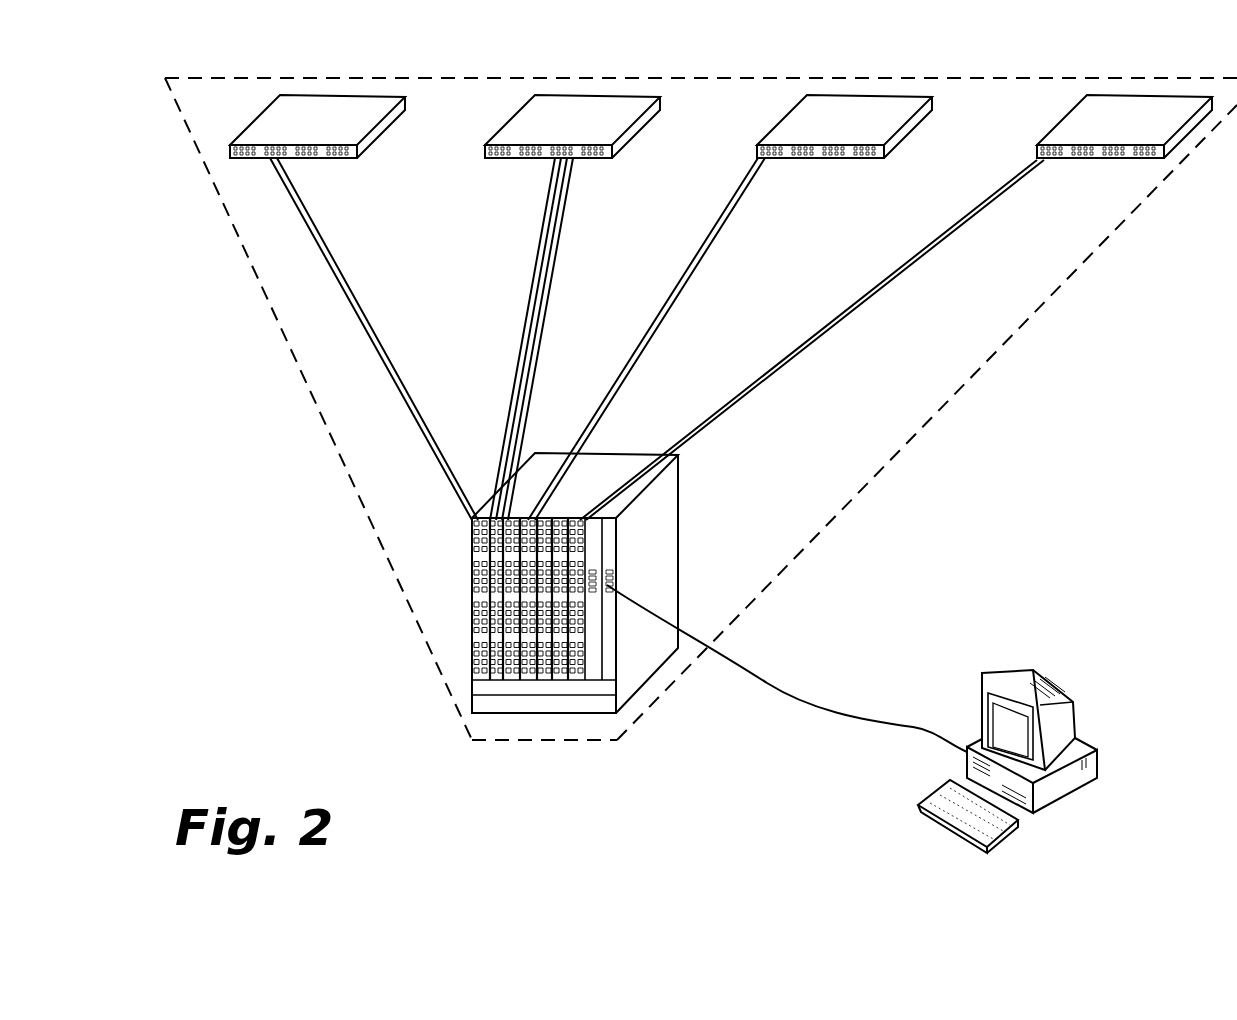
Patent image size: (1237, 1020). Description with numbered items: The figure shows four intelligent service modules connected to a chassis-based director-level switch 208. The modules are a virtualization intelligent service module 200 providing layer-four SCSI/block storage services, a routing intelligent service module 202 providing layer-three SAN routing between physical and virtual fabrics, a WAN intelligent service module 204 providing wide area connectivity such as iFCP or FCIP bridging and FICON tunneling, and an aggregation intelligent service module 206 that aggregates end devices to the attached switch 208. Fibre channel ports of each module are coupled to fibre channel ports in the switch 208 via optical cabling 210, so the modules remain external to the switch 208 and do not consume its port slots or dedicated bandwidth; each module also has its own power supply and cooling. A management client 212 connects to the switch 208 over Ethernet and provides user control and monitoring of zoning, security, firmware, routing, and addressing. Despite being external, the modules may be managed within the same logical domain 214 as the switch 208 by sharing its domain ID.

The virtualization intelligent service module 200 is at (333, 110).
The routing intelligent service module 202 is at (588, 110).
The WAN intelligent service module 204 is at (861, 110).
The aggregation intelligent service module 206 is at (1141, 110).
The chassis-based director-level switch 208 is at (653, 518).
The optical cabling 210 is at (985, 315).
The management client 212 is at (1082, 742).
The logical domain 214 is at (902, 458).